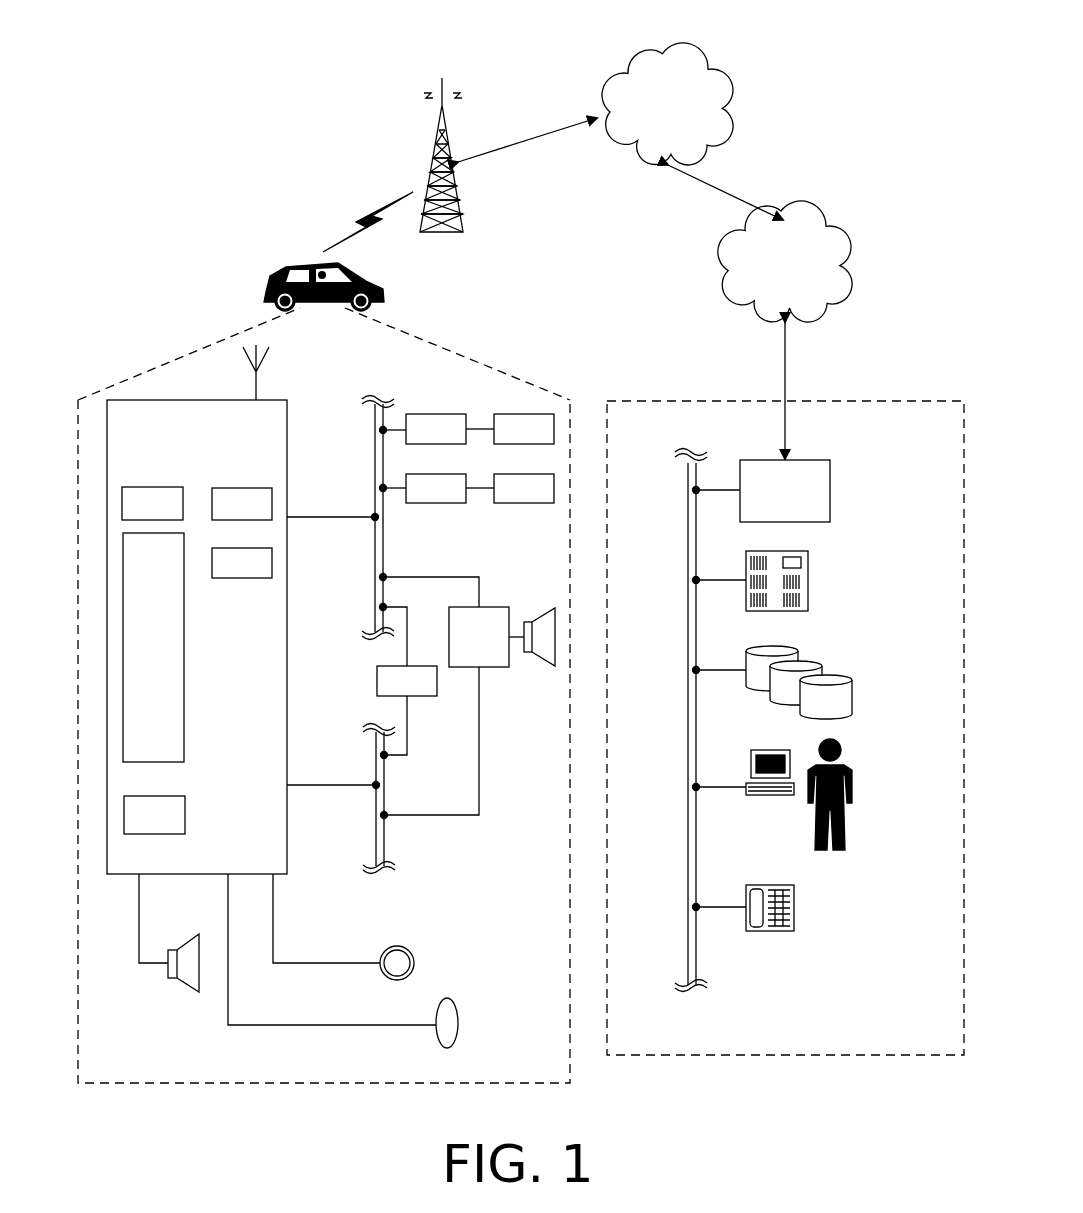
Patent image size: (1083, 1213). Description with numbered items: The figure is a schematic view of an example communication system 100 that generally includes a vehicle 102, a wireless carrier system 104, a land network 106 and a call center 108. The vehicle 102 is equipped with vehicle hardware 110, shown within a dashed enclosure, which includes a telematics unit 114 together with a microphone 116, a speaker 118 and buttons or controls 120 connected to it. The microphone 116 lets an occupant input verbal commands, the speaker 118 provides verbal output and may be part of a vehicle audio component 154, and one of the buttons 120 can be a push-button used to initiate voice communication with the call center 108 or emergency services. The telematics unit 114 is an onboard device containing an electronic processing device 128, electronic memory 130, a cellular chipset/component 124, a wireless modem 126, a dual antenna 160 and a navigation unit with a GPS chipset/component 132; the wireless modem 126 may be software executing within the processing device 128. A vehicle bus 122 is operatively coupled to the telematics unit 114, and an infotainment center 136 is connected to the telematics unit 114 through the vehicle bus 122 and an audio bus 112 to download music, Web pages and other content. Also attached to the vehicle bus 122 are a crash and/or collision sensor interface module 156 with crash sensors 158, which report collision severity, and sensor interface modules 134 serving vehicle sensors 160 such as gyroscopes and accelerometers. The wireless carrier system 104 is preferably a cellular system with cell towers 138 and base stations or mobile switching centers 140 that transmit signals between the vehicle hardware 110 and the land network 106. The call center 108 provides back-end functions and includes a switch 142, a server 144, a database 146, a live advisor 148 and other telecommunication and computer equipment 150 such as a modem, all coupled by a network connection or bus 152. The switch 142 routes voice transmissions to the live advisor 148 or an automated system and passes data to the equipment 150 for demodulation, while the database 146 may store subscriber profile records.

The communication system 100 is at (492, 44).
The vehicle 102 is at (270, 282).
The wireless carrier system 104 is at (572, 221).
The land network 106 is at (785, 261).
The call center 108 is at (784, 1057).
The vehicle hardware 110 is at (290, 1085).
The audio bus 112 is at (376, 838).
The telematics unit 114 is at (288, 722).
The microphone 116 is at (448, 998).
The speaker 118 is at (180, 987).
The buttons or controls 120 is at (395, 945).
The vehicle bus 122 is at (385, 563).
The cellular chipset/component 124 is at (152, 503).
The wireless modem 126 is at (242, 504).
The electronic processing device 128 is at (153, 647).
The electronic memory 130 is at (154, 815).
The GPS chipset/component 132 is at (242, 563).
The sensor interface modules 134 is at (436, 488).
The infotainment center 136 is at (407, 681).
The cell tower 138 is at (455, 135).
The base stations and/or mobile switching centers 140 is at (667, 104).
The switch 142 is at (785, 491).
The server 144 is at (808, 576).
The database 146 is at (853, 689).
The live advisor 148 is at (846, 763).
The telecommunication and computer equipment 150 is at (796, 894).
The call center bus 152 is at (688, 722).
The vehicle audio component 154 is at (502, 637).
The crash and/or collision sensor interface module 156 is at (436, 429).
The crash sensors 158 is at (524, 429).
The dual antenna 160 is at (258, 396).